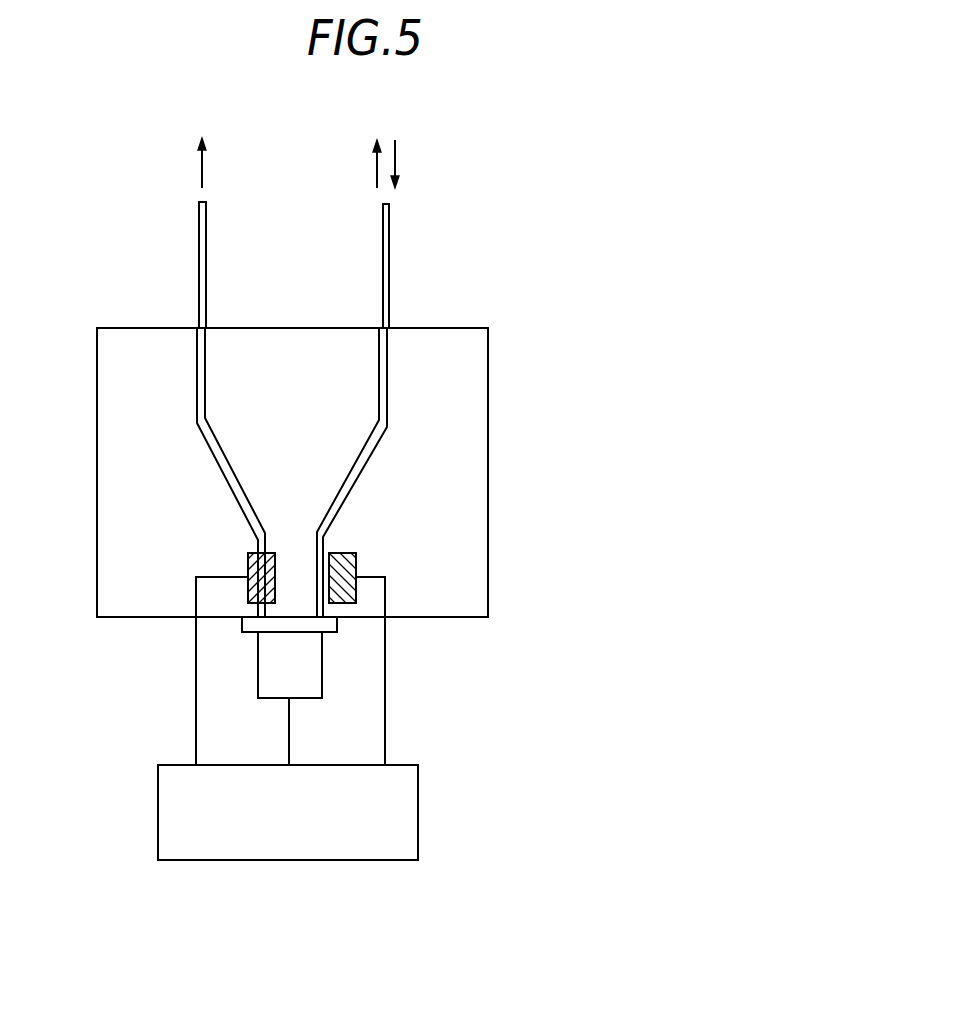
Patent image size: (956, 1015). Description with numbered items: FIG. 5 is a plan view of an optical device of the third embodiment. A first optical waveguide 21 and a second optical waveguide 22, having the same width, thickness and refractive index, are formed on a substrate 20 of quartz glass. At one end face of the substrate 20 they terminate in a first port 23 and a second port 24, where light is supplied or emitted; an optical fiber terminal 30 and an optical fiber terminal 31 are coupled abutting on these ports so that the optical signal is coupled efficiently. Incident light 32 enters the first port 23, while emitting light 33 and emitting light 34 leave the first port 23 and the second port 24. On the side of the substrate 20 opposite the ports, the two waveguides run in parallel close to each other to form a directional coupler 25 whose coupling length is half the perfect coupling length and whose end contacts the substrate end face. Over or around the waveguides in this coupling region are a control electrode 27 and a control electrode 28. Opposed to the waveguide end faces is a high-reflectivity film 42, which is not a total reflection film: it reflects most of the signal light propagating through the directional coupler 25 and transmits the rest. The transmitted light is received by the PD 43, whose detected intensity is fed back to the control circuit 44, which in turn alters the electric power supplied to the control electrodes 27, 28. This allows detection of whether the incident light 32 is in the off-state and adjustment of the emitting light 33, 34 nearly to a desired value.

The substrate 20 is at (457, 328).
The first optical waveguide 21 is at (388, 417).
The second optical waveguide 22 is at (205, 421).
The first port 23 is at (389, 328).
The second port 24 is at (207, 328).
The directional coupler 25 is at (288, 605).
The control electrode 27 is at (348, 553).
The control electrode 28 is at (269, 553).
The optical fiber terminal 30 is at (389, 243).
The optical fiber terminal 31 is at (206, 250).
The incident light 32 is at (397, 160).
The emitting light 33 is at (200, 160).
The emitting light 34 is at (375, 160).
The high-reflectivity film 42 is at (337, 632).
The PD 43 is at (313, 698).
The control circuit 44 is at (418, 828).